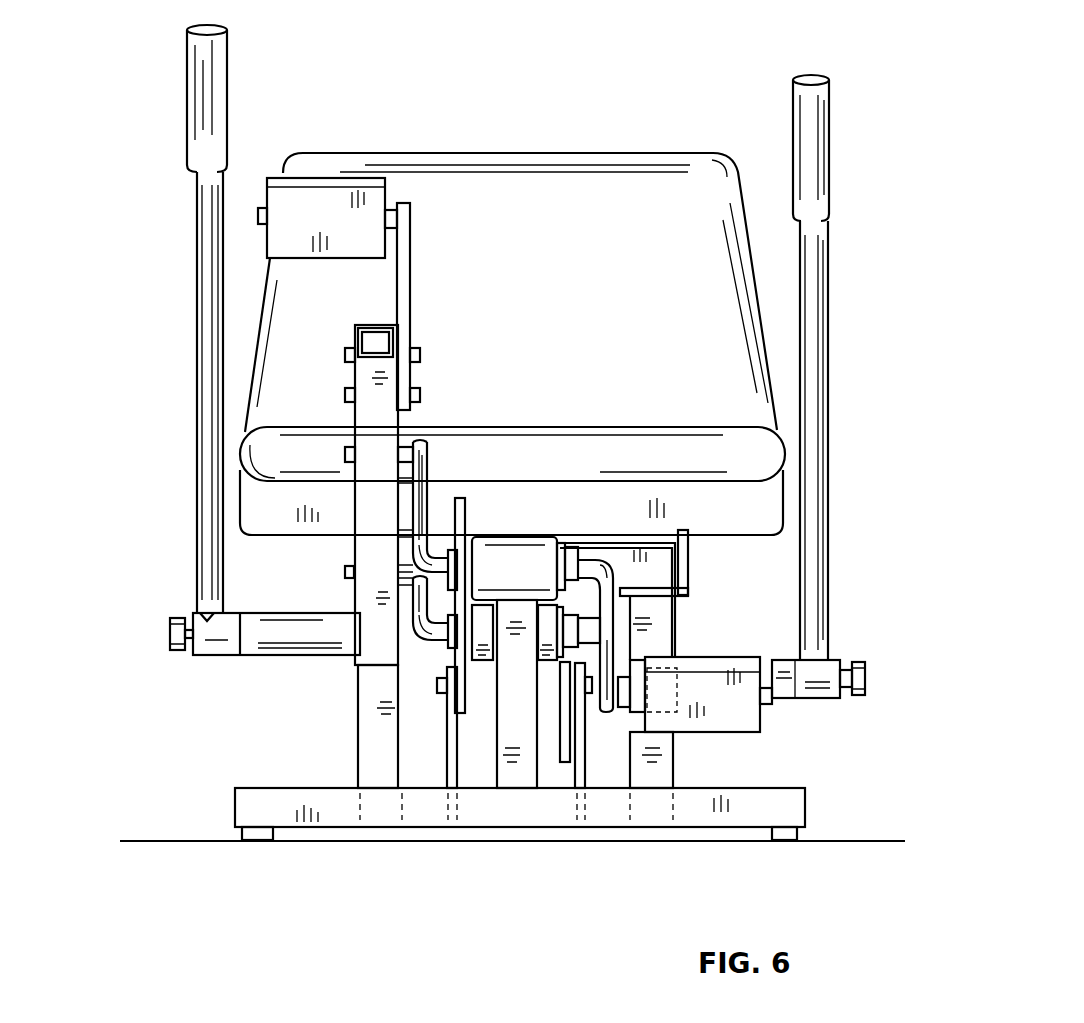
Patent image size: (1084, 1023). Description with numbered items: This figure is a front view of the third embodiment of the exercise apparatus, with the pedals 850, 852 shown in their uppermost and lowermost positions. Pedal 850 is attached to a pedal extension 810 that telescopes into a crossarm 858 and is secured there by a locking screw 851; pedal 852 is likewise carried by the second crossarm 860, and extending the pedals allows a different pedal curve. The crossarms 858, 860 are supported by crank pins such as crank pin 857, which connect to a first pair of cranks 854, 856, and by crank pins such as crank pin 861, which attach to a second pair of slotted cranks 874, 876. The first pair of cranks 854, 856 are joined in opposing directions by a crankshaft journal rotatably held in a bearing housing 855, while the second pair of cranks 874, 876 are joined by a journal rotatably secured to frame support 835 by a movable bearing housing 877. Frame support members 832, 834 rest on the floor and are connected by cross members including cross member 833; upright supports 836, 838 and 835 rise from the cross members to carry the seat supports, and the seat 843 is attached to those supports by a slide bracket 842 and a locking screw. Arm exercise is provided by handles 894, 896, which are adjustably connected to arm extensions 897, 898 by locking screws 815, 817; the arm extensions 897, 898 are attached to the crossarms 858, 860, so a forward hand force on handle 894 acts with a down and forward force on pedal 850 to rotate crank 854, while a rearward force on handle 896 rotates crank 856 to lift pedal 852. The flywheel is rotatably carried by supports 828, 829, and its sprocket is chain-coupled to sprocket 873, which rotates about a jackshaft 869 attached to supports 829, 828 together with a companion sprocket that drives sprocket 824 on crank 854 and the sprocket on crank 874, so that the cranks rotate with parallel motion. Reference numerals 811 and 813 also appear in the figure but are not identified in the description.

The pedal extension 810 is at (410, 258).
The pivot pin 811 is at (257, 220).
The adjustment block 813 is at (773, 685).
The locking screw 815 is at (170, 623).
The locking screw 817 is at (865, 673).
The sprocket 824 is at (458, 500).
The support 828 is at (585, 758).
The support 829 is at (448, 725).
The frame support member 832 is at (375, 810).
The cross member 833 is at (807, 803).
The frame support member 834 is at (658, 807).
The upright support 835 is at (497, 758).
The upright support 836 is at (355, 775).
The upright support 838 is at (673, 753).
The slide bracket 842 is at (688, 543).
The seat 843 is at (455, 152).
The pedal 850 is at (305, 178).
The locking screw 851 is at (420, 395).
The pedal 852 is at (720, 656).
The crank 854 is at (413, 517).
The bearing housing 855 is at (543, 536).
The crank 856 is at (613, 580).
The crank pin 857 is at (345, 453).
The crossarm 858 is at (355, 425).
The crossarm 860 is at (638, 658).
The crank pin 861 is at (345, 572).
The jackshaft 869 is at (437, 690).
The sprocket 873 is at (562, 760).
The crank 874 is at (413, 613).
The crank 876 is at (605, 613).
The movable bearing housing 877 is at (483, 620).
The handle 894 is at (197, 325).
The handle 896 is at (828, 293).
The arm extension 897 is at (277, 653).
The arm extension 898 is at (783, 698).